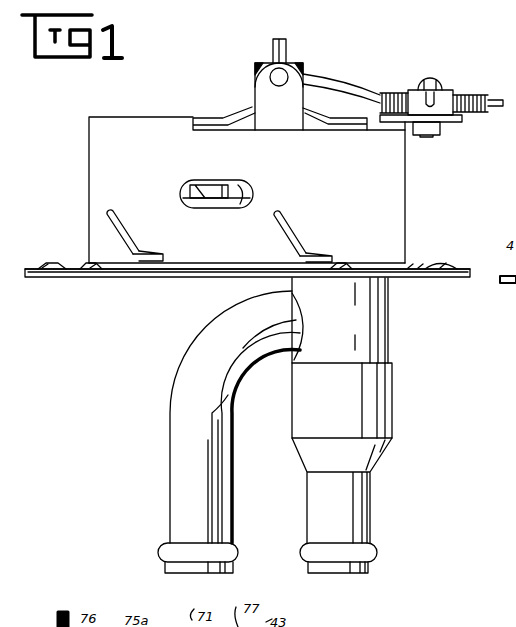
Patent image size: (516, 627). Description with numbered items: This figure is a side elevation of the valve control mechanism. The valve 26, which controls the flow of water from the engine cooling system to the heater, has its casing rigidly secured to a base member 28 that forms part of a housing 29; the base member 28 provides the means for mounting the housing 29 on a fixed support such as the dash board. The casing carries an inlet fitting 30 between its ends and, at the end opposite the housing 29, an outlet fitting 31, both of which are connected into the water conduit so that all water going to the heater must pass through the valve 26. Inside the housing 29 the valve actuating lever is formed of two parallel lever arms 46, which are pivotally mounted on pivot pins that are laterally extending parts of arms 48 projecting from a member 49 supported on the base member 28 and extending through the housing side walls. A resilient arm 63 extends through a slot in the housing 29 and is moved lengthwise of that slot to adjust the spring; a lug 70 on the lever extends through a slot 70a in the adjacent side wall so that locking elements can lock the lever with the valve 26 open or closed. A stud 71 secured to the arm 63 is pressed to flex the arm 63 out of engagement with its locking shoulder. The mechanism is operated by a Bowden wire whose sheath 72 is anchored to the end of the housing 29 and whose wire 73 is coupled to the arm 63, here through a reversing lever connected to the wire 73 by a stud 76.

The valve 26 is at (387, 338).
The base member 28 is at (410, 278).
The housing 29 is at (406, 215).
The inlet fitting 30 is at (178, 420).
The outlet fitting 31 is at (350, 499).
The lever arms 46 is at (207, 202).
The arms 48 is at (130, 246).
The member 49 is at (163, 255).
The arm 63 is at (300, 126).
The lug 70 is at (214, 186).
The slot 70a is at (243, 188).
The stud 71 is at (283, 76).
The sheath 72 is at (470, 96).
The actuating member or wire 73 is at (345, 88).
The stud 76 is at (287, 46).